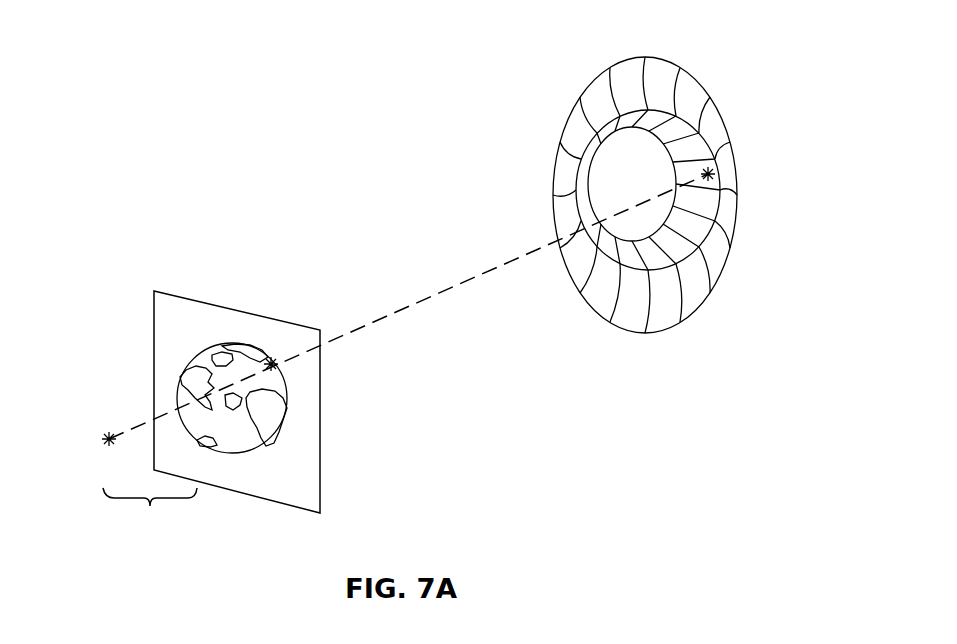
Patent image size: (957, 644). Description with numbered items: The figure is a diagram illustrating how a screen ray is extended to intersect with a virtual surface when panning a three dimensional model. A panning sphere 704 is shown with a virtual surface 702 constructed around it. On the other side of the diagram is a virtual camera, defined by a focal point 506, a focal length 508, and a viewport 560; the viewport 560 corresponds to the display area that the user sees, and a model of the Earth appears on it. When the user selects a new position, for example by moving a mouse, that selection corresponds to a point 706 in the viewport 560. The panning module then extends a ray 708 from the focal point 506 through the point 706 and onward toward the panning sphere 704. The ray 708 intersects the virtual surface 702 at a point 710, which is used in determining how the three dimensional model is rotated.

The focal point 506 is at (104, 439).
The focal length 508 is at (150, 535).
The viewport 560 is at (322, 406).
The virtual surface 702 is at (693, 87).
The panning sphere 704 is at (608, 174).
The point 706 is at (272, 357).
The ray 708 is at (447, 292).
The point 710 is at (713, 172).